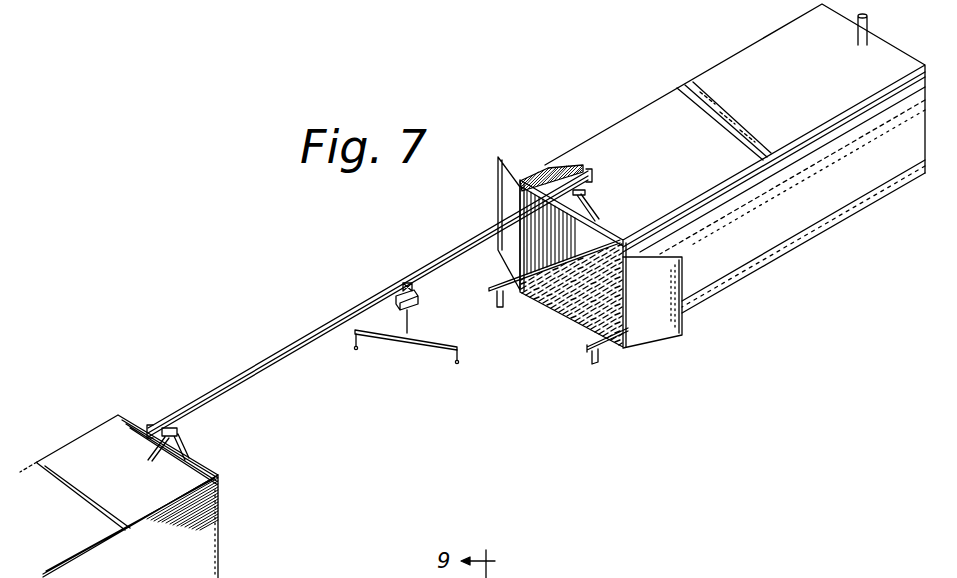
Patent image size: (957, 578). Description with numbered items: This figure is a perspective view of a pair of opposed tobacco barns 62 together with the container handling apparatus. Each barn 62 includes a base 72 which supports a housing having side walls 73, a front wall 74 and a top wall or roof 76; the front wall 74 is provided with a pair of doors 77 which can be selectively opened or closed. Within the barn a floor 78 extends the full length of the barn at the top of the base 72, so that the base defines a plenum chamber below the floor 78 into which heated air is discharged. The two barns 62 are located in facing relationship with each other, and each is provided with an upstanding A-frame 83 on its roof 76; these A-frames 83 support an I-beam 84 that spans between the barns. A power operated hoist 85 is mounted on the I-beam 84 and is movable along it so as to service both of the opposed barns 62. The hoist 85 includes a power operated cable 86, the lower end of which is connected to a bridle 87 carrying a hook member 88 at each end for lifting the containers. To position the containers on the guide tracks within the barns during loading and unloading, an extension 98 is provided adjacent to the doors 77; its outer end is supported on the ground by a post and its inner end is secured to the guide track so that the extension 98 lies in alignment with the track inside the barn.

The barn 62 is at (652, 105).
The base 72 is at (747, 272).
The side walls 73 is at (818, 212).
The front wall 74 is at (530, 197).
The top wall or roof 76 is at (710, 95).
The doors 77 is at (500, 187).
The floor 78 is at (567, 295).
The A-frame 83 is at (597, 210).
The I-beam 84 is at (279, 352).
The power operated hoist 85 is at (418, 301).
The power operated cable 86 is at (407, 327).
The bridle 87 is at (388, 341).
The hook member 88 is at (354, 350).
The extension 98 is at (489, 302).